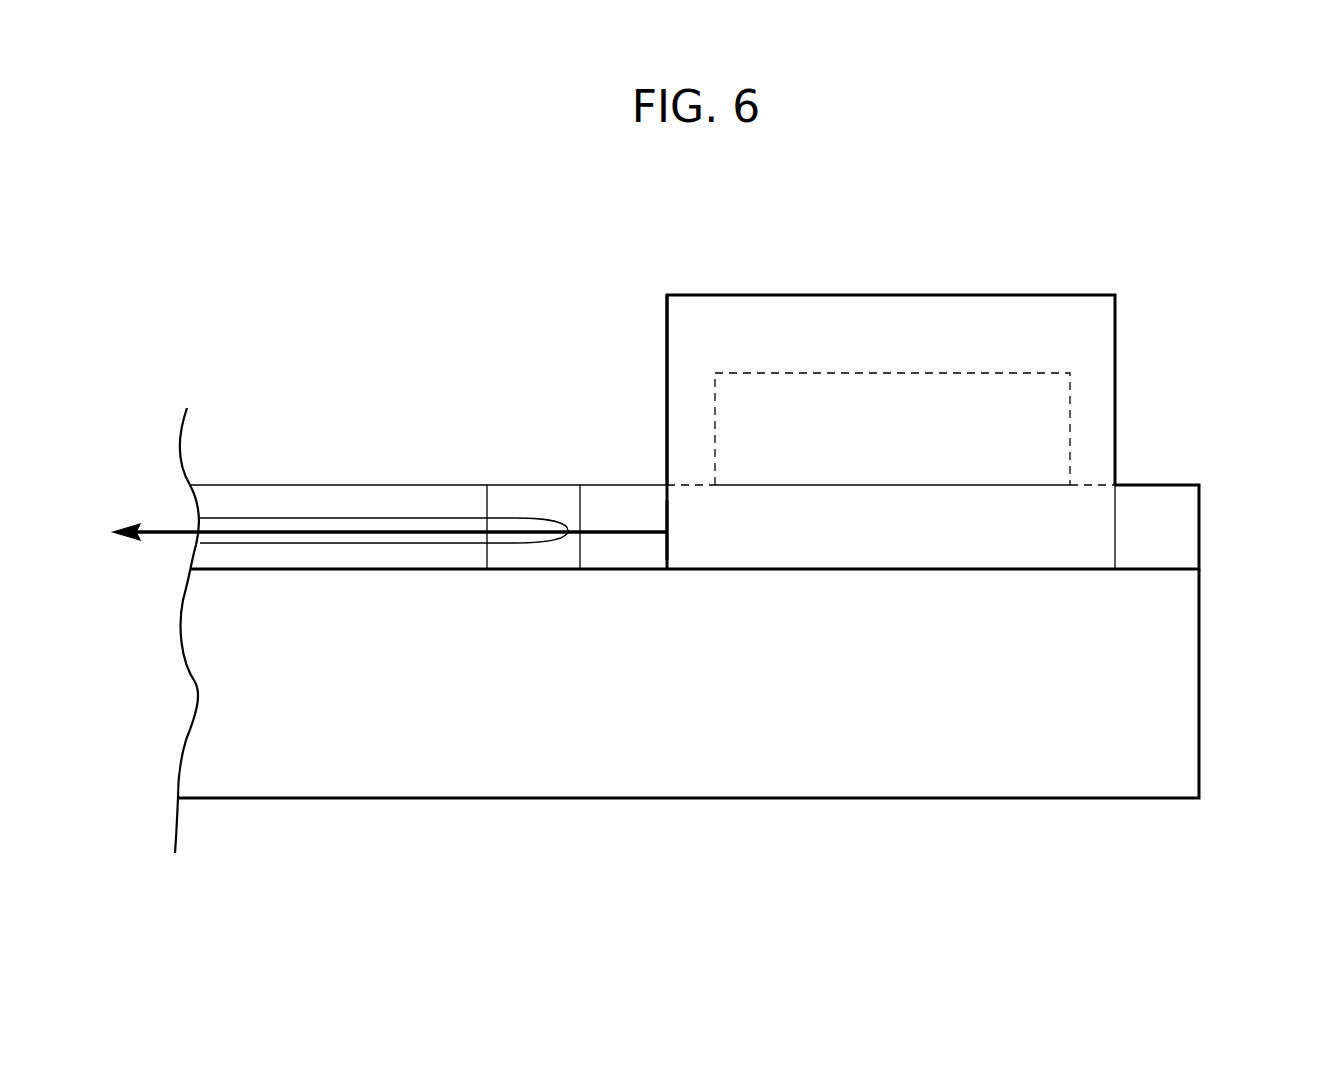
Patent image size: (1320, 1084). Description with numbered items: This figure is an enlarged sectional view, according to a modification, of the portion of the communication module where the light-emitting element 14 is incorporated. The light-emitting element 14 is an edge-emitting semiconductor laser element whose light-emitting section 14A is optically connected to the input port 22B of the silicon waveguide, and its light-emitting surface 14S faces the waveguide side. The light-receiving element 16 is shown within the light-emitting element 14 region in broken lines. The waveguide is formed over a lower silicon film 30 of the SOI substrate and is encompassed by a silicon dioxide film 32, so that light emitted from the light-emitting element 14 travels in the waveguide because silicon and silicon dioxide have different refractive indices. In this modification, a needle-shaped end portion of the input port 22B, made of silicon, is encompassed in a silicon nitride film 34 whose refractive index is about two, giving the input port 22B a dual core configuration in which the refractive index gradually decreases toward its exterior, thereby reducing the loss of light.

The light-emitting element 14 is at (1005, 312).
The light-emitting surface 14S is at (667, 293).
The light-emitting section 14A is at (661, 526).
The light-receiving element 16 is at (897, 370).
The input port 22B is at (371, 525).
The lower silicon film 30 is at (1185, 680).
The silicon dioxide film 32 is at (265, 558).
The silicon nitride film 34 is at (537, 500).